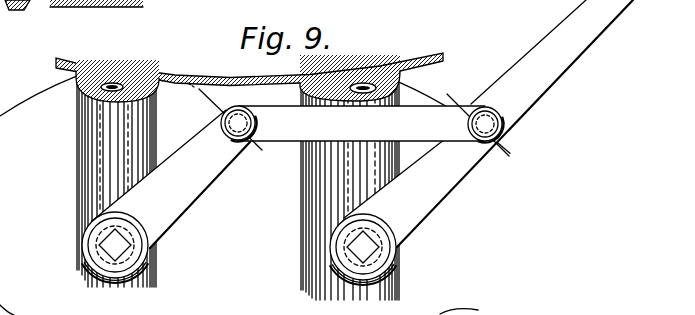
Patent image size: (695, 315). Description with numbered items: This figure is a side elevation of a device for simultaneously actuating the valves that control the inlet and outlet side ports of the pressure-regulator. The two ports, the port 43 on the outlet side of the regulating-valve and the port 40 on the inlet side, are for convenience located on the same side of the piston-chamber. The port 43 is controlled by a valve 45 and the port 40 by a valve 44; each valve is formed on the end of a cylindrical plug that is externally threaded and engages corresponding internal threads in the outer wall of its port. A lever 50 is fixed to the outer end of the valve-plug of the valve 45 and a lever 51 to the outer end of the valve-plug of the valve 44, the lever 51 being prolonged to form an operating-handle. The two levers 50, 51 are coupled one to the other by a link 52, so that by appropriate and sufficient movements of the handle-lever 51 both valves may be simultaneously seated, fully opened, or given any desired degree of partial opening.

The port 40 is at (362, 72).
The port 43 is at (110, 84).
The valve 44 is at (362, 248).
The valve 45 is at (102, 243).
The lever 50 is at (171, 179).
The lever 51 is at (488, 123).
The link 52 is at (348, 119).